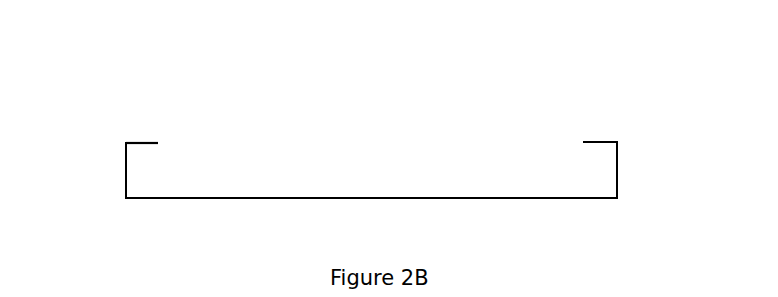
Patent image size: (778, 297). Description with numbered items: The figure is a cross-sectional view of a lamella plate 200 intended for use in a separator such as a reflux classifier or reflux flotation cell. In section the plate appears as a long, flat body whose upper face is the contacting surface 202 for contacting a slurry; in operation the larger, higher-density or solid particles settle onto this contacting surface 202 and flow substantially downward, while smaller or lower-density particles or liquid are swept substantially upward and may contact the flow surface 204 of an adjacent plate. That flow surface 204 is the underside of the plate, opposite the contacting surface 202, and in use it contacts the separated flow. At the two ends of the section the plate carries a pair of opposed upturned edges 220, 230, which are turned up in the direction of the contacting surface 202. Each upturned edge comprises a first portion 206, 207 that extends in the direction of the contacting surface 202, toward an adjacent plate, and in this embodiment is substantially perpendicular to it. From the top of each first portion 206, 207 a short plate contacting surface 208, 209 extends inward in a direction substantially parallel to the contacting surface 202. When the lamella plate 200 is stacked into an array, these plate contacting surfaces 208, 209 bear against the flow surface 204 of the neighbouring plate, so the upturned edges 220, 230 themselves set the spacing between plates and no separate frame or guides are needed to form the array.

The lamella plate 200 is at (223, 93).
The contacting surface 202 is at (366, 185).
The flow surface 204 is at (436, 210).
The first portion 206 is at (126, 170).
The first portion 207 is at (617, 168).
The plate contacting surface 208 is at (139, 143).
The plate contacting surface 209 is at (597, 142).
The upturned edge 220 is at (126, 136).
The upturned edge 230 is at (619, 134).